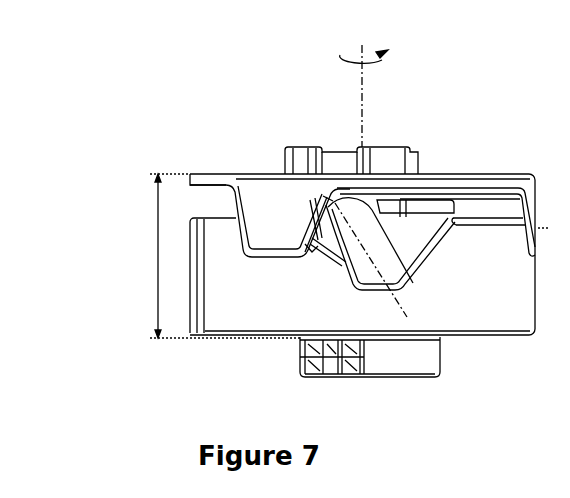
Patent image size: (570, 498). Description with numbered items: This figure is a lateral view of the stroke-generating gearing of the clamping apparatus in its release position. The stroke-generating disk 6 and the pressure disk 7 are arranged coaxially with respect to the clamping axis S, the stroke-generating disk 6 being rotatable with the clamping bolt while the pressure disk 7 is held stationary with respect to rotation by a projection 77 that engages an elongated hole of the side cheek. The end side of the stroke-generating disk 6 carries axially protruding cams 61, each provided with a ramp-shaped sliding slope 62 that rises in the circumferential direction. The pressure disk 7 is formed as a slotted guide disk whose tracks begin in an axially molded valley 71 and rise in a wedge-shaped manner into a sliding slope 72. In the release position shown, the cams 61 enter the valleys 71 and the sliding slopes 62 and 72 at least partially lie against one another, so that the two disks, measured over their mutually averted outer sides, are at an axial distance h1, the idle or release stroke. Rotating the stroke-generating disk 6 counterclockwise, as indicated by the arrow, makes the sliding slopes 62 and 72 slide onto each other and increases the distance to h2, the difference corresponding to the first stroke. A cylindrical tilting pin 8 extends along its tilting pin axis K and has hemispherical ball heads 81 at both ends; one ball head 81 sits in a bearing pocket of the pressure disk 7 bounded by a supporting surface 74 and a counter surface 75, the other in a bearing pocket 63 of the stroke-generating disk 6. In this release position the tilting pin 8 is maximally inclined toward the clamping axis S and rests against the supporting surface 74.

The stroke-generating disk 6 is at (275, 183).
The cams 61 is at (258, 220).
The sliding slope 62 is at (274, 246).
The bearing pocket 63 is at (352, 208).
The pressure disk 7 is at (250, 295).
The valley 71 is at (292, 186).
The sliding slope 72 is at (312, 268).
The supporting surface 74 is at (340, 270).
The counter surface 75 is at (437, 205).
The projection 77 is at (392, 353).
The tilting pin 8 is at (395, 208).
The ball head 81 is at (348, 210).
The tilting pin axis K is at (455, 200).
The clamping axis S is at (358, 90).
The axial distance h1 is at (158, 247).
The axial distance h2 is at (554, 229).